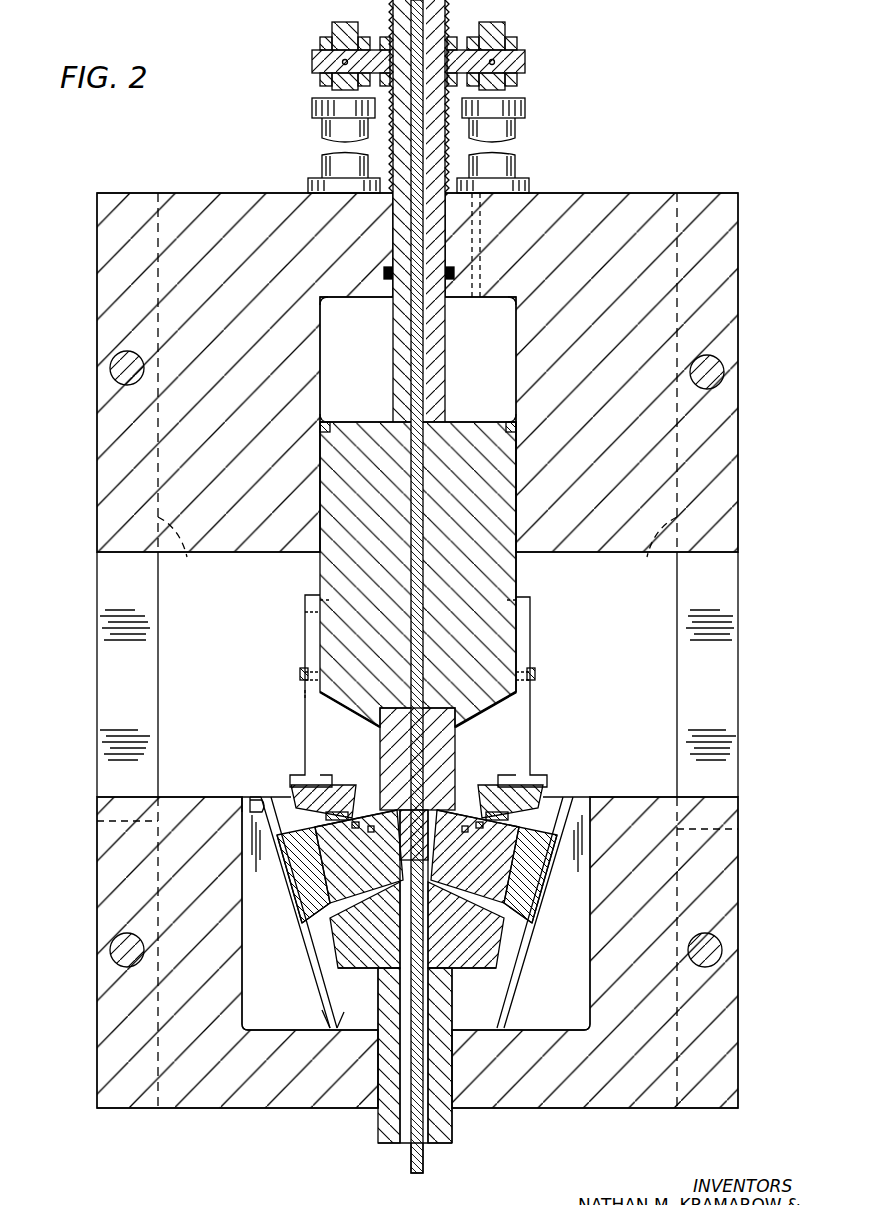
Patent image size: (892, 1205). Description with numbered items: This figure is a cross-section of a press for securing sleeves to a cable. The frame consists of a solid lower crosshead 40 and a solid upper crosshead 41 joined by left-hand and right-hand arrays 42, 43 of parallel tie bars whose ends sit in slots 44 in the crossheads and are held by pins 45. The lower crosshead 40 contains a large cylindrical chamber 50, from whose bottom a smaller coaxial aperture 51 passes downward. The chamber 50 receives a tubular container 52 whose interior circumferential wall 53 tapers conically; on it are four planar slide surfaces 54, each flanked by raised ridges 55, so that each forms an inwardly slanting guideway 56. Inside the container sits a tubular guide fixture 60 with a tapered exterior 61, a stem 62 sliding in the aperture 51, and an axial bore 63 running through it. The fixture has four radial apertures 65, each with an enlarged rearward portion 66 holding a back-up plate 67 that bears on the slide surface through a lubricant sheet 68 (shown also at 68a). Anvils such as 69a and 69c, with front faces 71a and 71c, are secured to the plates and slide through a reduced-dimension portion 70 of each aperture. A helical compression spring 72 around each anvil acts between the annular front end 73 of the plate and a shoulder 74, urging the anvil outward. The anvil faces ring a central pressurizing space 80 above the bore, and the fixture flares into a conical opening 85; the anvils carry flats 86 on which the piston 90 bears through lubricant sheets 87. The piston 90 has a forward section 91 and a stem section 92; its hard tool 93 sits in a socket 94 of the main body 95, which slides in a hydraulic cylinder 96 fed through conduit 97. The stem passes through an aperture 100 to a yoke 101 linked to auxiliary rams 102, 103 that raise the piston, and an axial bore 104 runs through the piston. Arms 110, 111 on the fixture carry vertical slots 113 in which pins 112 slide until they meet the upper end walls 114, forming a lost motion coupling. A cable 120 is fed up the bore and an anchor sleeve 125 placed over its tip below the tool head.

The lower crosshead 40 is at (601, 1108).
The upper crosshead 41 is at (609, 212).
The left-hand array of tie bars 42 is at (97, 636).
The right-hand array of tie bars 43 is at (738, 627).
The slots 44 is at (752, 829).
The pins 45 is at (722, 948).
The cylindrical chamber 50 is at (314, 808).
The cylindrical aperture 51 is at (380, 1085).
The tubular container 52 is at (296, 1007).
The interior circumferential wall 53 is at (340, 1024).
The planar slide surfaces 54 is at (302, 970).
The ridges 55 is at (306, 992).
The guideway 56 is at (322, 1022).
The guide fixture 60 is at (376, 975).
The tapered exterior 61 is at (510, 958).
The stem 62 is at (453, 1128).
The axial bore 63 is at (397, 1146).
The apertures 65 is at (322, 812).
The enlarged rearward portion 66 is at (320, 791).
The back-up plate 67 is at (290, 880).
The lubricant sheet 68 is at (305, 870).
The segment lower face 68a is at (312, 918).
The anvil 69a is at (303, 914).
The anvil 69c is at (533, 908).
The reduced-dimension portion 70 is at (474, 802).
The anvil front face 71a is at (386, 846).
The anvil front face 71c is at (448, 844).
The helical compression spring 72 is at (372, 920).
The annular front end 73 is at (278, 840).
The shoulder 74 is at (362, 796).
The central pressurizing space 80 is at (359, 856).
The conically-tapered opening 85 is at (362, 732).
The flats 86 is at (350, 800).
The lubricant sheets 87 is at (391, 802).
The piston 90 is at (454, 414).
The forward section 91 is at (521, 562).
The stem section 92 is at (391, 357).
The cylindrical tool 93 is at (401, 709).
The socket 94 is at (455, 712).
The main body 95 is at (500, 616).
The hydraulic cylinder 96 is at (516, 330).
The conduit 97 is at (480, 270).
The aperture 100 is at (446, 243).
The yoke 101 is at (324, 62).
The auxiliary hydraulic ram 102 is at (328, 166).
The auxiliary hydraulic ram 103 is at (509, 168).
The axial bore 104 is at (421, 538).
The arm 110 is at (312, 631).
The arm 111 is at (525, 709).
The pins 112 is at (304, 676).
The vertical slots 113 is at (320, 698).
The upper end walls 114 is at (308, 612).
The cable 120 is at (426, 1164).
The anchor sleeve 125 is at (475, 856).